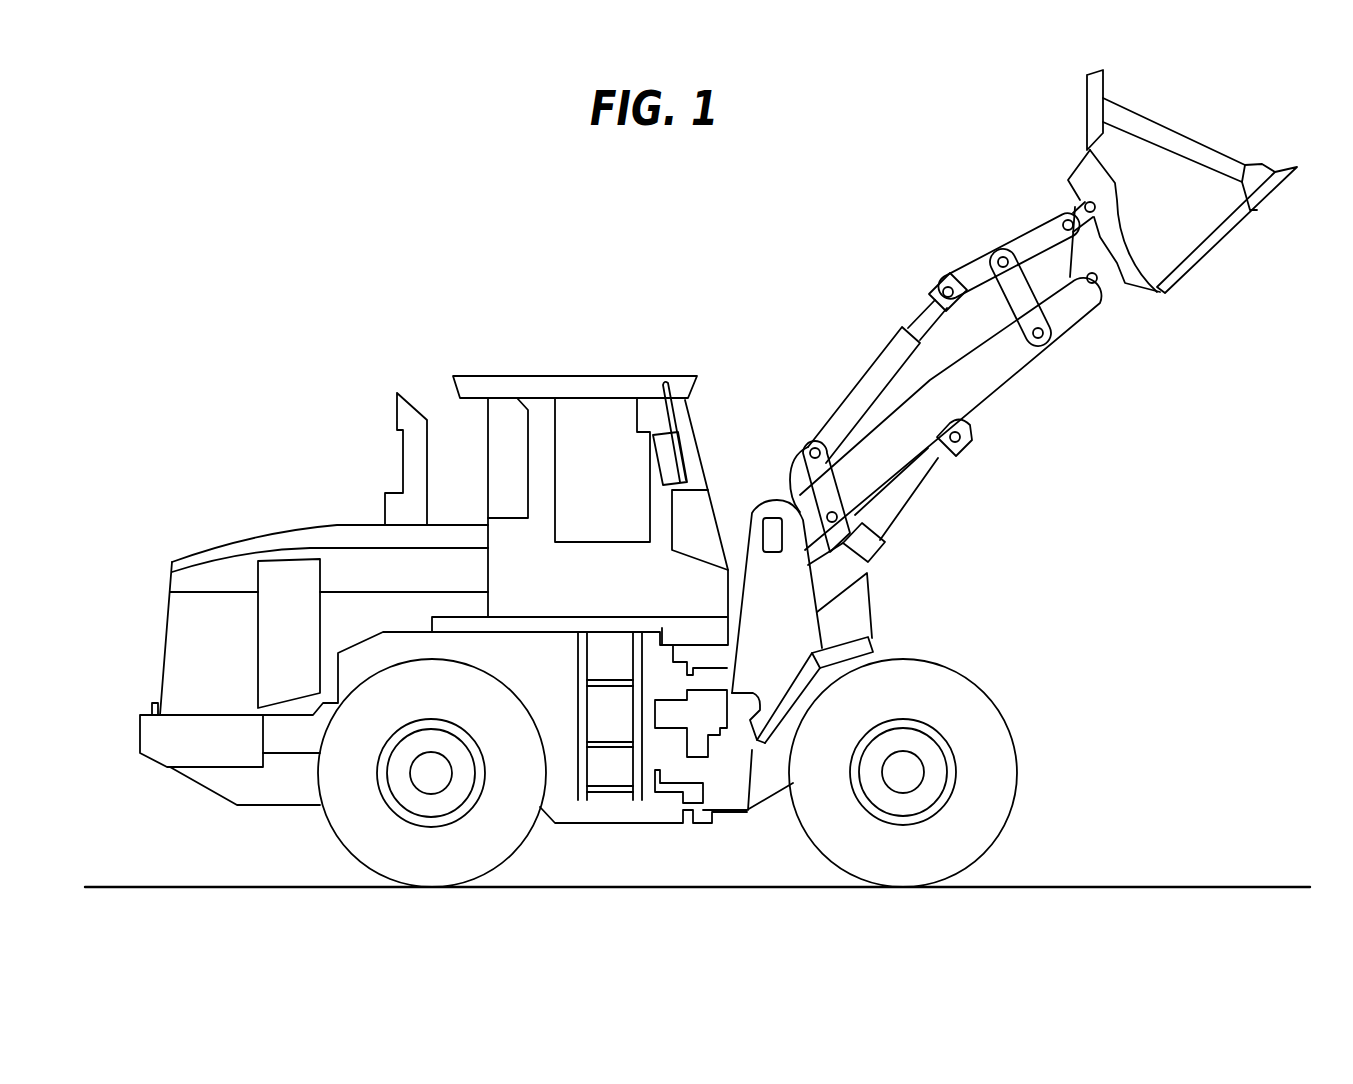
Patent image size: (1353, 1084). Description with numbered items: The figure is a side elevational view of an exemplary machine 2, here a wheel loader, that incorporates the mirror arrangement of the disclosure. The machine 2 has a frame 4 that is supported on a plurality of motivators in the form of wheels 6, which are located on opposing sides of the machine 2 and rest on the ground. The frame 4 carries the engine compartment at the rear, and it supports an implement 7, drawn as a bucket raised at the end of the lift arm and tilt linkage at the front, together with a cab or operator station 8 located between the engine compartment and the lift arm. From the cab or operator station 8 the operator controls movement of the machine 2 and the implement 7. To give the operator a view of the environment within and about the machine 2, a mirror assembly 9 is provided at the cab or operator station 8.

The machine 2 is at (333, 247).
The frame 4 is at (210, 785).
The wheels 6 is at (500, 858).
The implement 7 is at (1188, 270).
The cab or operator station 8 is at (703, 485).
The mirror assembly 9 is at (665, 448).